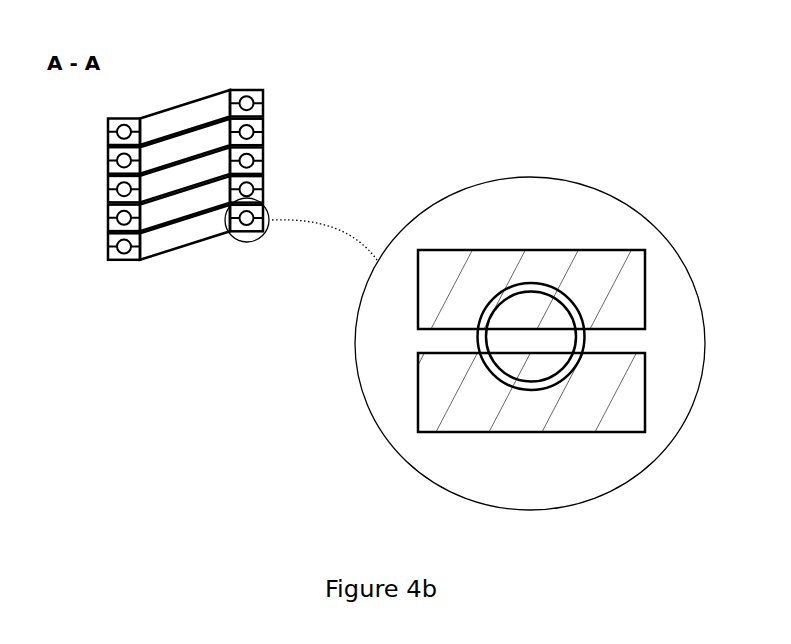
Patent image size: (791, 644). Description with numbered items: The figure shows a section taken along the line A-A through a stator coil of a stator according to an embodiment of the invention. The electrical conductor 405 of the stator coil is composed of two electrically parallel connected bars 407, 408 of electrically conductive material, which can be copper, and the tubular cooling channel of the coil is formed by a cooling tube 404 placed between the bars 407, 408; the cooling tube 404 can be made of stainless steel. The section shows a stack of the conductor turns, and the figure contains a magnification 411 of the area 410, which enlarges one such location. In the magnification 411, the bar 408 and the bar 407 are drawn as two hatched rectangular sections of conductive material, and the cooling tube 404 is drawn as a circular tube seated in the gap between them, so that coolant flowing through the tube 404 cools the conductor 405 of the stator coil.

The cooling tube 404 is at (478, 342).
The electrical conductor 405 is at (263, 92).
The bar 407 is at (418, 395).
The bar 408 is at (610, 250).
The area 410 is at (267, 210).
The magnification 411 is at (538, 177).